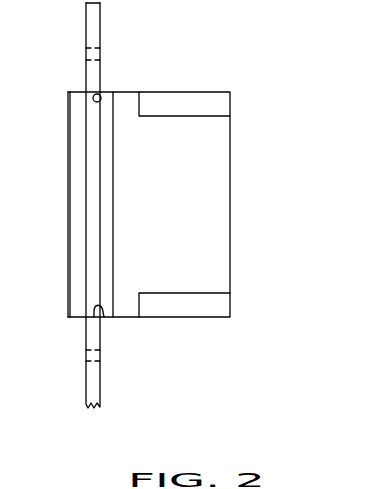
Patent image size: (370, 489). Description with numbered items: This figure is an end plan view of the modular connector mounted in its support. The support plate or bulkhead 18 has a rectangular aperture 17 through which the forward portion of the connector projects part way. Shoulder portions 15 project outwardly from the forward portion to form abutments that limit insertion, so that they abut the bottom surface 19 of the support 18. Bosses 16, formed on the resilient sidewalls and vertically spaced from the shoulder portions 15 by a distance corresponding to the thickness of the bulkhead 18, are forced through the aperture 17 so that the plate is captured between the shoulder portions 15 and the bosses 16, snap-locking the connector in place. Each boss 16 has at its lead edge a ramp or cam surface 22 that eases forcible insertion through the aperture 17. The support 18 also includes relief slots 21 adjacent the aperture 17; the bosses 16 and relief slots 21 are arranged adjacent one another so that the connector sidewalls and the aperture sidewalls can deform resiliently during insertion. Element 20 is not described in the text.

The shoulder portions 15 is at (107, 111).
The bosses 16 is at (86, 93).
The aperture 17 is at (100, 96).
The support plate or bulkhead 18 is at (94, 15).
The bottom surface 19 is at (102, 13).
The tube end portion 20 is at (86, 32).
The relief slots 21 is at (84, 53).
The ramp or cam surface 22 is at (82, 84).